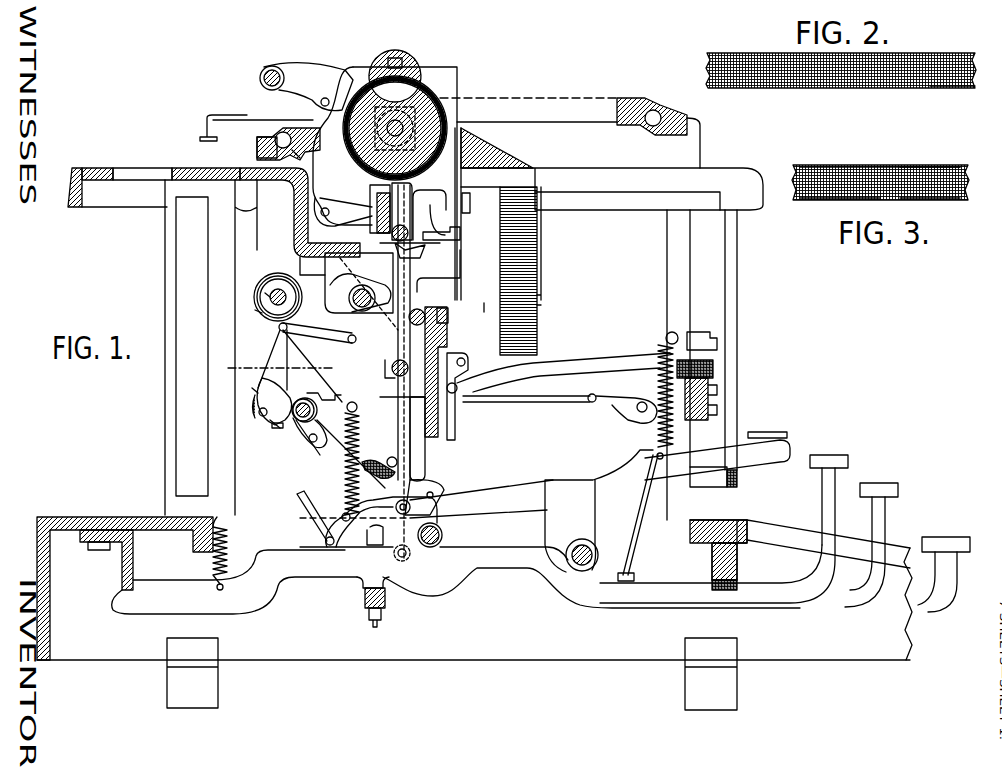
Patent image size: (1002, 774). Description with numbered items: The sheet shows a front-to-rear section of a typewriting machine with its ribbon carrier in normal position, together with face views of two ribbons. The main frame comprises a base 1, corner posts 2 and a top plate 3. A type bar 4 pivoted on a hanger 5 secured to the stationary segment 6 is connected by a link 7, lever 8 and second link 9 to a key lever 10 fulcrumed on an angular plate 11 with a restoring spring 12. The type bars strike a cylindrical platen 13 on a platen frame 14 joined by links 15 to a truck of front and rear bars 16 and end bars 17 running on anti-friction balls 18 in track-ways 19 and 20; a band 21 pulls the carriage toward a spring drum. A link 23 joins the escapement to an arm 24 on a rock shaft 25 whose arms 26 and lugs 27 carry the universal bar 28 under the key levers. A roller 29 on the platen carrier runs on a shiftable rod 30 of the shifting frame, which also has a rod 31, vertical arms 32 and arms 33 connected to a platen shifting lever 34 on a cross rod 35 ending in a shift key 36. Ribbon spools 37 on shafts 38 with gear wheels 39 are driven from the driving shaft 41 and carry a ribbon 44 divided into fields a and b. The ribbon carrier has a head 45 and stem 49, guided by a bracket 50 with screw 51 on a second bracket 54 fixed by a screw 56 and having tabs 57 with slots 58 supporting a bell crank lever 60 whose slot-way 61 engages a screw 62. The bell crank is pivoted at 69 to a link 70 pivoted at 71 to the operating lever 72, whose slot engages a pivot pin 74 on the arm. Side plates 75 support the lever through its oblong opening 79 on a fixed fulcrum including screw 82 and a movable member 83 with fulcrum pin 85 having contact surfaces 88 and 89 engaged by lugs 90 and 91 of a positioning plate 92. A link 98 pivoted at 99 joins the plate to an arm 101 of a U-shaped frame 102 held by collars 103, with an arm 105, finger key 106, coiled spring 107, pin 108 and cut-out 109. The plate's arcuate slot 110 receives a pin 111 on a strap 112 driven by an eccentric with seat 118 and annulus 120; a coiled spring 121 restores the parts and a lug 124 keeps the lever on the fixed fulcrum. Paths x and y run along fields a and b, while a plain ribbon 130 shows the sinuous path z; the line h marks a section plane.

In FIG. 1, the base 1 is at (108, 517).
In FIG. 1, the corner post 2 is at (165, 420).
In FIG. 1, the top plate 3 is at (110, 170).
In FIG. 1, the type bar 4 is at (586, 362).
In FIG. 1, the hanger 5 is at (452, 434).
In FIG. 1, the stationary segment 6 is at (432, 442).
In FIG. 1, the link 7 is at (546, 398).
In FIG. 1, the lever 8 is at (620, 415).
In FIG. 1, the second link 9 is at (645, 514).
In FIG. 1, the key lever 10 is at (583, 598).
In FIG. 1, the angular plate 11 is at (134, 562).
In FIG. 1, the restoring spring 12 is at (227, 542).
In FIG. 1, the cylindrical platen 13 is at (402, 86).
In FIG. 1, the platen frame 14 is at (377, 229).
In FIG. 1, the link 15 is at (326, 94).
In FIG. 1, the front and rear bar 16 is at (300, 147).
In FIG. 1, the end bar 17 is at (561, 106).
In FIG. 1, the anti-friction ball 18 is at (280, 133).
In FIG. 1, the grooved track-way 19 is at (256, 148).
In FIG. 1, the grooved track-way 20 is at (677, 112).
In FIG. 1, the band or strap 21 is at (204, 135).
In FIG. 1, the link 23 is at (327, 520).
In FIG. 1, the arm 24 is at (428, 487).
In FIG. 1, the rock shaft 25 is at (442, 536).
In FIG. 1, the arm 26 is at (394, 556).
In FIG. 1, the depending arm or lug 27 is at (380, 541).
In FIG. 1, the universal bar 28 is at (386, 600).
In FIG. 1, the wheel or roller 29 is at (412, 194).
In FIG. 1, the shiftable rod 30 is at (403, 228).
In FIG. 1, the rod 31 is at (388, 368).
In FIG. 1, the vertical arm 32 is at (398, 334).
In FIG. 1, the arm 33 is at (398, 389).
In FIG. 1, the platen shifting lever 34 is at (637, 608).
In FIG. 1, the cross rod 35 is at (598, 549).
In FIG. 1, the shift key 36 is at (948, 537).
In FIG. 1, the ribbon spool 37 is at (540, 262).
In FIG. 1, the shaft 38 is at (483, 316).
In FIG. 1, the beveled gear wheel 39 is at (300, 272).
In FIG. 1, the driving shaft 41 is at (278, 285).
In FIG. 1, the ribbon 44 is at (503, 152).
In FIG. 3, the ribbon 44 is at (890, 182).
In FIG. 1, the head 45 is at (463, 183).
In FIG. 1, the stem 49 is at (461, 276).
In FIG. 1, the angular bracket 50 is at (455, 192).
In FIG. 1, the headed screw 51 is at (468, 204).
In FIG. 1, the second angular bracket 54 is at (432, 232).
In FIG. 1, the screw 56 is at (388, 360).
In FIG. 1, the tab or ear 57 is at (344, 287).
In FIG. 1, the open mouthed slot 58 is at (386, 274).
In FIG. 1, the bell crank lever 60 is at (349, 299).
In FIG. 1, the slot-way 61 is at (449, 319).
In FIG. 1, the screw 62 is at (426, 311).
In FIG. 1, the pivot 69 is at (351, 345).
In FIG. 1, the link 70 is at (325, 358).
In FIG. 1, the pivot 71 is at (277, 332).
In FIG. 1, the operating lever 72 is at (332, 464).
In FIG. 1, the headed pivot pin 74 is at (380, 464).
In FIG. 1, the side plate 75 is at (352, 403).
In FIG. 1, the oblong opening 79 is at (316, 414).
In FIG. 1, the headed screw 82 is at (304, 401).
In FIG. 1, the angular member or lever 83 is at (296, 434).
In FIG. 1, the fulcrum pin 85 is at (309, 442).
In FIG. 1, the contact surface 88 is at (266, 390).
In FIG. 1, the contact surface 89 is at (266, 423).
In FIG. 1, the lug 90 is at (285, 375).
In FIG. 1, the lug 91 is at (280, 427).
In FIG. 1, the positioning member or plate 92 is at (255, 393).
In FIG. 1, the link 98 is at (398, 507).
In FIG. 1, the pivot 99 is at (392, 458).
In FIG. 1, the arm 101 is at (488, 494).
In FIG. 1, the U-shaped frame 102 is at (578, 480).
In FIG. 1, the collar 103 is at (575, 542).
In FIG. 1, the arm 105 is at (757, 465).
In FIG. 1, the key or finger piece 106 is at (770, 430).
In FIG. 1, the coiled spring 107 is at (690, 431).
In FIG. 1, the pin 108 is at (665, 336).
In FIG. 1, the cut-out 109 is at (740, 482).
In FIG. 1, the arcuate slot 110 is at (258, 400).
In FIG. 1, the pin 111 is at (262, 414).
In FIG. 1, the arm or strap 112 is at (268, 352).
In FIG. 1, the reduced seat 118 is at (265, 296).
In FIG. 1, the annulus 120 is at (258, 308).
In FIG. 1, the coiled spring 121 is at (342, 477).
In FIG. 1, the lug 124 is at (320, 400).
In FIG. 2, the plain ribbon 130 is at (917, 56).
In FIG. 1, the section line h is at (275, 371).
In FIG. 3, the type path x is at (828, 168).
In FIG. 3, the type path y is at (828, 200).
In FIG. 2, the type path z is at (943, 88).
In FIG. 3, the ribbon field a is at (920, 167).
In FIG. 3, the ribbon field b is at (936, 200).